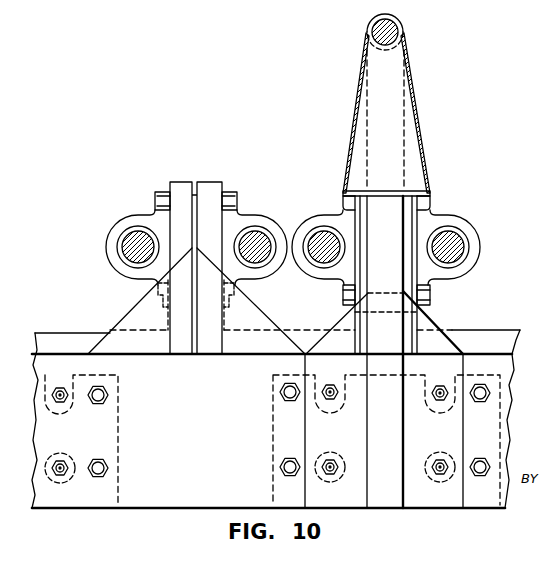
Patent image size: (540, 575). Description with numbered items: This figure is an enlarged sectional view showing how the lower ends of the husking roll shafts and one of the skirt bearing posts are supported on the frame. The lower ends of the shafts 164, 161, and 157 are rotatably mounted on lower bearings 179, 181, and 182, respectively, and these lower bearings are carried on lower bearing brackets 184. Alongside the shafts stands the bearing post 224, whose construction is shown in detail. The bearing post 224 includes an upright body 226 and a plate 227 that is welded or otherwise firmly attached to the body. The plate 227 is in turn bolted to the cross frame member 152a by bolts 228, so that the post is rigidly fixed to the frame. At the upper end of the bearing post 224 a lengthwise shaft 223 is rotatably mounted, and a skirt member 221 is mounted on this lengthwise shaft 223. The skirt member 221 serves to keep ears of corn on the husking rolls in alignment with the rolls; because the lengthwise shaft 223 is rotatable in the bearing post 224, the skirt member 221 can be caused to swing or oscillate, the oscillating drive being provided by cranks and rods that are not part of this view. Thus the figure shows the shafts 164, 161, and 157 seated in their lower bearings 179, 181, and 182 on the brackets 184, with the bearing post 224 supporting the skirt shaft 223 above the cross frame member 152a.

The cross frame member 152a is at (162, 485).
The lower bearing brackets 184 is at (85, 487).
The bolts 228 is at (327, 399).
The plate 227 is at (423, 340).
The lower bearing 179 is at (232, 225).
The shaft 164 is at (257, 235).
The shaft 161 is at (320, 234).
The shaft 157 is at (448, 240).
The lower bearing 181 is at (338, 283).
The lower bearing 182 is at (427, 264).
The upright body 226 is at (381, 487).
The bearing post 224 is at (385, 220).
The skirt member 221 is at (414, 98).
The lengthwise shaft 223 is at (387, 22).